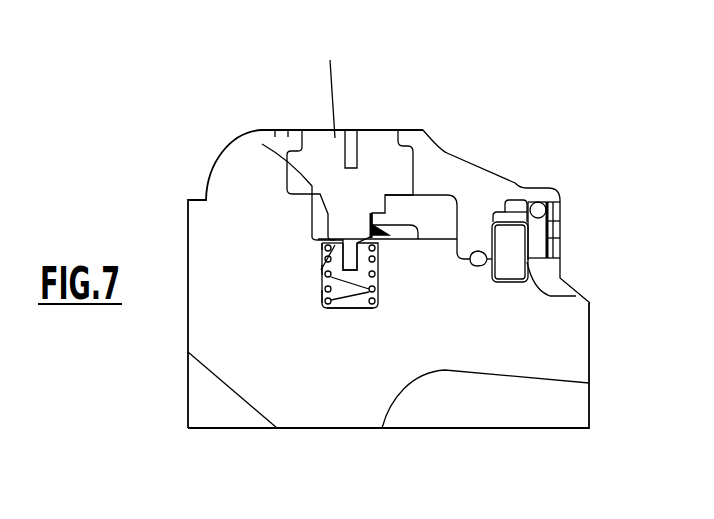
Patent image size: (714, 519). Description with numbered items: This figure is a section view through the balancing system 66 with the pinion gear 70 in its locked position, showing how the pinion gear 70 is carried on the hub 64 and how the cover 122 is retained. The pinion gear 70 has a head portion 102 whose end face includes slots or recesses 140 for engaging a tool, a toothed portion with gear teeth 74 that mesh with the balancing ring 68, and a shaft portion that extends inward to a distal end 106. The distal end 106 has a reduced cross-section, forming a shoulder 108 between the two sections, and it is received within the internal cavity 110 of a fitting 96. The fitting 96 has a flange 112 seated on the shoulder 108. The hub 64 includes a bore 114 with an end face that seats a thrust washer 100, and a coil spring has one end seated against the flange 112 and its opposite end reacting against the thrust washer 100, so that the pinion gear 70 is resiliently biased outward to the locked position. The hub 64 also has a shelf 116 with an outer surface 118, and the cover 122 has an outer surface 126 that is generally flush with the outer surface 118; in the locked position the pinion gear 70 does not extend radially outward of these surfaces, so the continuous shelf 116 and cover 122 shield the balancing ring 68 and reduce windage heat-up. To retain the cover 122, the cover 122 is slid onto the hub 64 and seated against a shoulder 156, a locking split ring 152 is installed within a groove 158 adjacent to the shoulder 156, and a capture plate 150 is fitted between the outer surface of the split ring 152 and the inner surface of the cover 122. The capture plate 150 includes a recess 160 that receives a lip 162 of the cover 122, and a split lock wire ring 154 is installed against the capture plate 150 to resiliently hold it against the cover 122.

The hub 64 is at (210, 222).
The balancing system 66 is at (391, 118).
The balancing ring 68 is at (434, 227).
The pinion gear 70 is at (327, 149).
The gear teeth 74 is at (262, 144).
The fitting 96 is at (378, 278).
The thrust washer 100 is at (343, 300).
The head portion 102 is at (330, 60).
The distal end 106 is at (325, 270).
The shoulder 108 is at (313, 232).
The internal cavity 110 is at (352, 272).
The flange 112 is at (321, 243).
The bore 114 is at (320, 295).
The shelf 116 is at (275, 133).
The outer surface of shelf 118 is at (288, 133).
The cover 122 is at (437, 177).
The outer surface of cover 126 is at (423, 130).
The slots or recesses 140 is at (350, 138).
The capture plate 150 is at (520, 205).
The locking split ring 152 is at (503, 272).
The split lock wire ring 154 is at (541, 203).
The shoulder 156 is at (478, 262).
The groove 158 is at (572, 292).
The recess 160 is at (507, 221).
The lip 162 is at (500, 213).